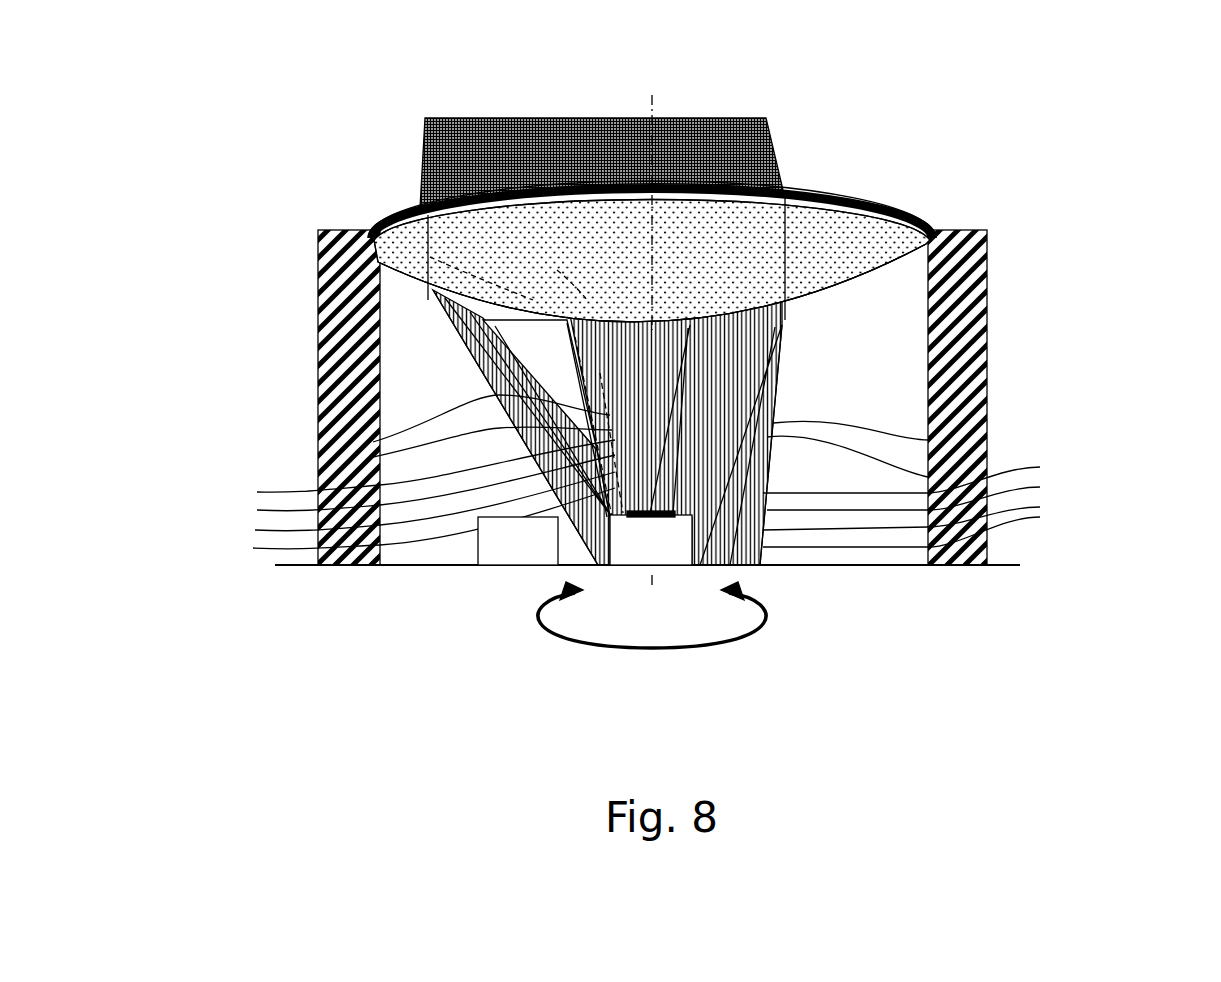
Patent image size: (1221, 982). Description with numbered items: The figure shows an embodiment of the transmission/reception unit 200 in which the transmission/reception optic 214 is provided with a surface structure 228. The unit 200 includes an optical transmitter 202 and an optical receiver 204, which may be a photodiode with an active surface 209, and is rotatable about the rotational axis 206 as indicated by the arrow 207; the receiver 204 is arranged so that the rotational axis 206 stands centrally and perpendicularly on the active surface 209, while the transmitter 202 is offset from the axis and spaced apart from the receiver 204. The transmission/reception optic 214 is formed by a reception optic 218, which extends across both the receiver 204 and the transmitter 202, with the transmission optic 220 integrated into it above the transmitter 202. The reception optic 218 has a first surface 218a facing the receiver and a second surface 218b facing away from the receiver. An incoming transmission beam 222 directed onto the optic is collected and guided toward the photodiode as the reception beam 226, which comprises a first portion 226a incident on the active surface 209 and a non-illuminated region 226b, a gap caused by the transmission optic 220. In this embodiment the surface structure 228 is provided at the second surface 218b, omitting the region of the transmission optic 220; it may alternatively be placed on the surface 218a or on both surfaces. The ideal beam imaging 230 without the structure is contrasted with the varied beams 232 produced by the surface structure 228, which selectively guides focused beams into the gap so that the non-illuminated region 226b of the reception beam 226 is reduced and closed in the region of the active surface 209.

The transmission/reception unit 200 is at (292, 153).
The optical transmitter 202 is at (480, 565).
The optical receiver 204 is at (668, 556).
The rotational axis 206 is at (652, 97).
The arrow 207 is at (632, 650).
The active surface 209 is at (445, 563).
The transmission/reception optic 214 is at (745, 284).
The reception optic 218 is at (890, 205).
The first surface of the reception optic 218a is at (835, 305).
The second surface of the reception optic 218b is at (825, 222).
The transmission optic 220 is at (500, 286).
The transmission beam 222 is at (680, 135).
The reception beam 226 is at (470, 427).
The first portion of the reception beam 226a is at (747, 377).
The non-illuminated region 226b is at (377, 385).
The surface structure 228 is at (800, 182).
The ideal beam imaging 230 is at (373, 457).
The varied beams 232 is at (245, 478).